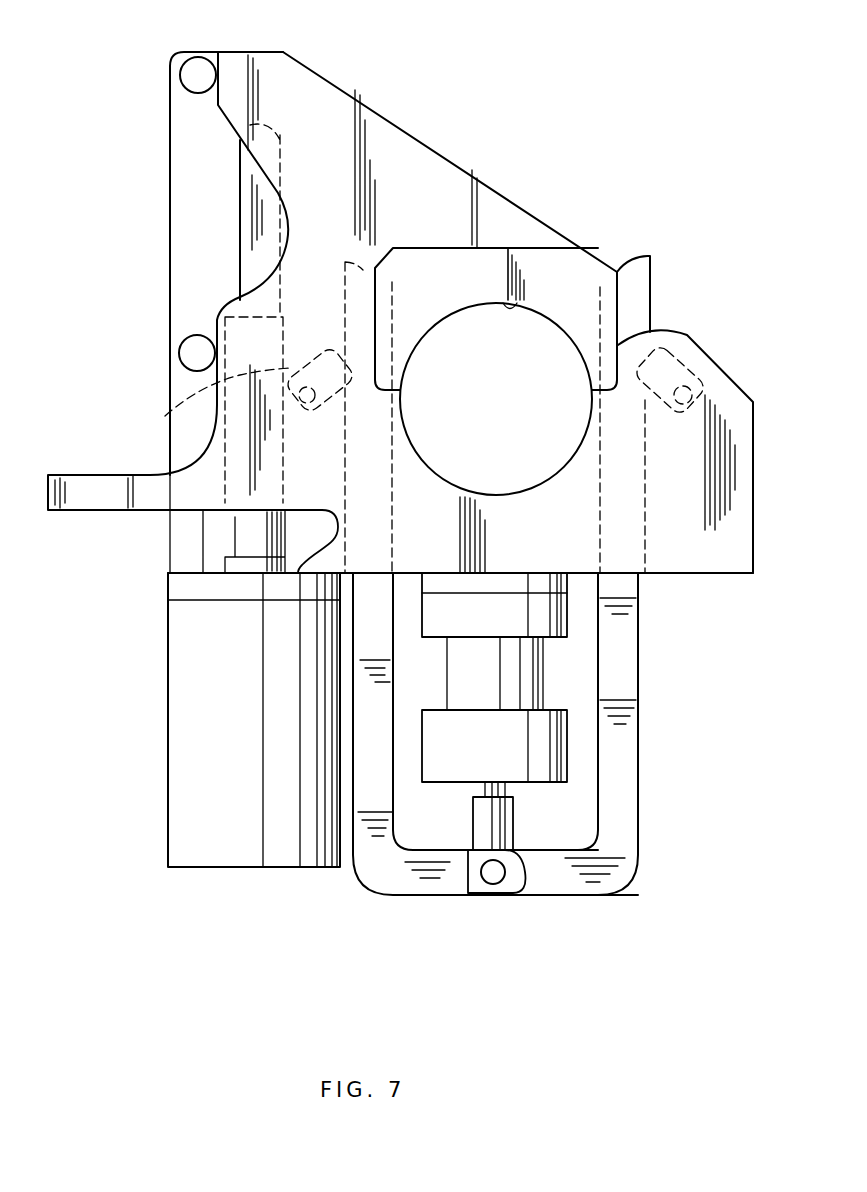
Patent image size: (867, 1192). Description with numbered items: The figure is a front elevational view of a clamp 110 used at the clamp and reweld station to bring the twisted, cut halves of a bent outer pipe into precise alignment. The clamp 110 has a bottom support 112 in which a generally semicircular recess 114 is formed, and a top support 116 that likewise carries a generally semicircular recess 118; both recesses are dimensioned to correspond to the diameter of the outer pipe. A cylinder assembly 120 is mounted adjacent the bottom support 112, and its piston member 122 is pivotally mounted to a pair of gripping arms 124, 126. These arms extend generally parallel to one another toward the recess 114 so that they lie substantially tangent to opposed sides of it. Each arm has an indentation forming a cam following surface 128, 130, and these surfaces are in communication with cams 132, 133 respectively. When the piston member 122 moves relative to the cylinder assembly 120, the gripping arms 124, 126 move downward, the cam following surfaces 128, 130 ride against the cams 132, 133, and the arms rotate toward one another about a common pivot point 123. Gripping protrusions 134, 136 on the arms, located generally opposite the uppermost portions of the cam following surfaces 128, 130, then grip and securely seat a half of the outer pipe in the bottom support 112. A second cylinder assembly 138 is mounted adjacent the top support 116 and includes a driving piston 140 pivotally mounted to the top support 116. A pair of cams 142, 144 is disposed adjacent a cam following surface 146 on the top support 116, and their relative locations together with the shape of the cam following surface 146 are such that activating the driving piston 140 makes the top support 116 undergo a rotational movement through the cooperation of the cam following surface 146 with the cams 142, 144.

The clamp 110 is at (517, 147).
The bottom support 112 is at (754, 461).
The semicircular recess 114 is at (537, 485).
The top support 116 is at (347, 97).
The semicircular recess 118 is at (507, 305).
The cylinder assembly 120 is at (539, 765).
The piston member 122 is at (483, 787).
The common pivot point 123 is at (495, 875).
The gripping arm 124 is at (368, 870).
The gripping arm 126 is at (630, 772).
The cam following surface 128 is at (338, 352).
The cam following surface 130 is at (650, 342).
The cam 132 is at (165, 416).
The cam 133 is at (678, 362).
The gripping protrusion 134 is at (396, 302).
The gripping protrusion 136 is at (603, 348).
The second cylinder assembly 138 is at (206, 685).
The driving piston 140 is at (247, 230).
The cam 142 is at (185, 357).
The cam 144 is at (203, 64).
The cam following surface 146 is at (222, 123).